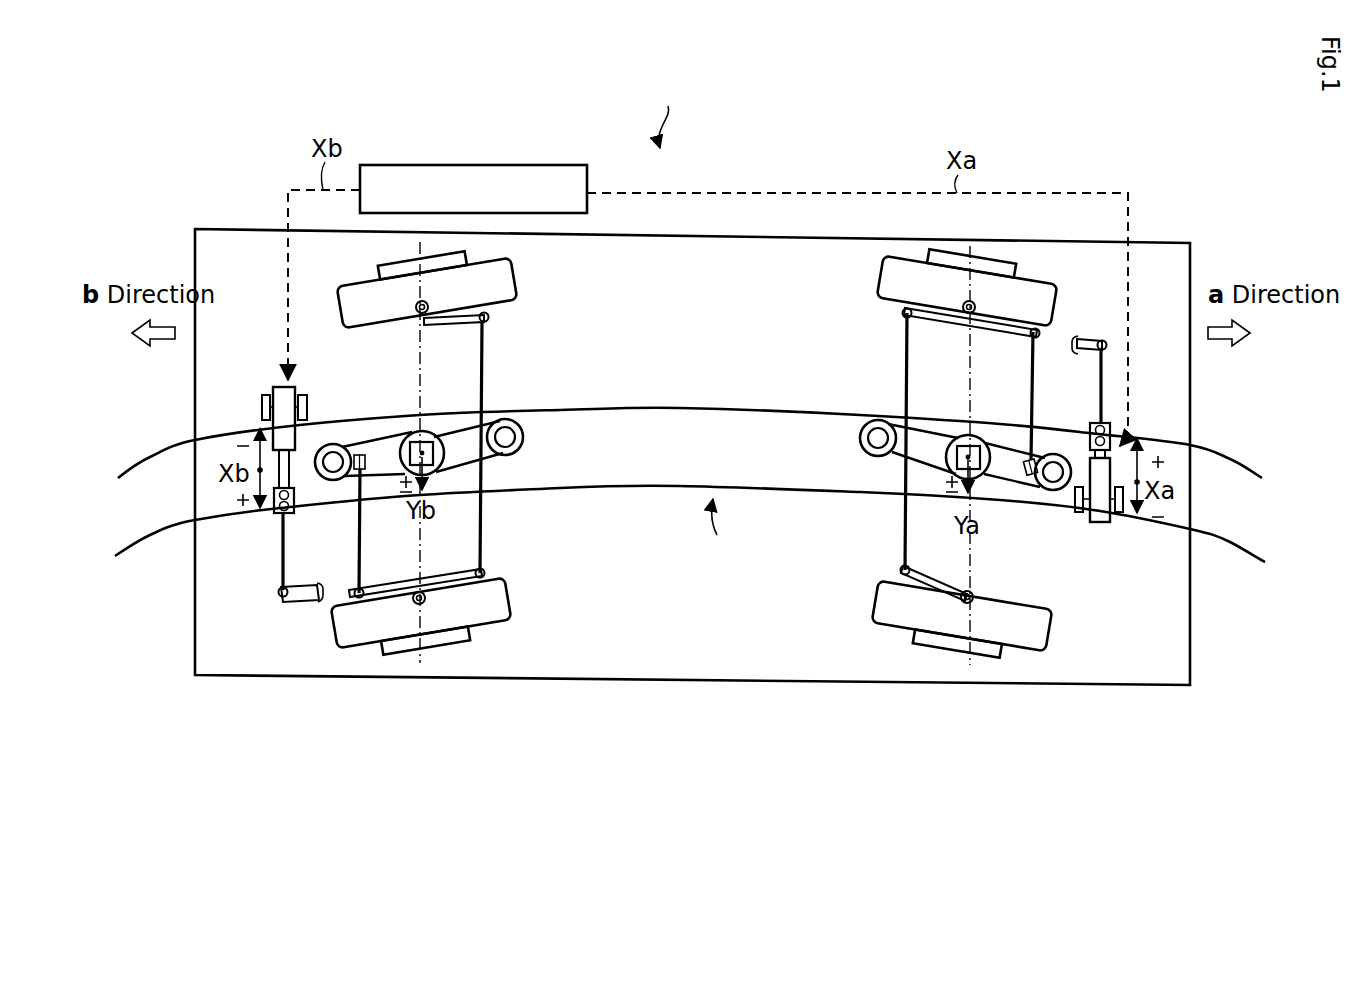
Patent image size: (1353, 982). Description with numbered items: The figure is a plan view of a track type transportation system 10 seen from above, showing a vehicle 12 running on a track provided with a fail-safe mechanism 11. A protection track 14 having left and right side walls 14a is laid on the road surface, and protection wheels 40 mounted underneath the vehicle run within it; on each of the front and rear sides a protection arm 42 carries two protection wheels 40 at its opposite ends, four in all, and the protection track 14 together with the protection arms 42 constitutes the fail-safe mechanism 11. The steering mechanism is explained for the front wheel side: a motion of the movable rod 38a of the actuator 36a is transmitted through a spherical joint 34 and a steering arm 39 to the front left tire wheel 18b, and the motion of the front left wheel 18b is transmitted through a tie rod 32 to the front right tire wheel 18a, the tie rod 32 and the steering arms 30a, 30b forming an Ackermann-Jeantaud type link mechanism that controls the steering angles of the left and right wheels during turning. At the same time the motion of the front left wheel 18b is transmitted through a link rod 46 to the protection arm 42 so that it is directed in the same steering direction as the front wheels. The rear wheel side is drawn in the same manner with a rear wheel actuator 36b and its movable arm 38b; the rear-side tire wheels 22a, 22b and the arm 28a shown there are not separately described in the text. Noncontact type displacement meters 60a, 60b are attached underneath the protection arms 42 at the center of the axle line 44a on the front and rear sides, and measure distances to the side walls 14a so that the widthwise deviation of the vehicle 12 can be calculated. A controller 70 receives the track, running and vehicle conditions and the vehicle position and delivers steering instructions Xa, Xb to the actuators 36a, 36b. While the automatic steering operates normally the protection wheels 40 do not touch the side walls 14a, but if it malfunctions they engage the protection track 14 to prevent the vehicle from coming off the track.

The track type transportation system 10 is at (683, 103).
The fail-safe mechanism 11 is at (730, 562).
The vehicle 12 is at (228, 228).
The protection track 14 is at (573, 490).
The side walls of protection track 14a is at (620, 412).
The front right tire wheel 18a is at (888, 275).
The front left tire wheel 18b is at (895, 620).
The front wheel (b side) 22a is at (518, 272).
The rear wheel (b side) 22b is at (496, 617).
The knuckle arm 28a is at (377, 592).
The steering arm 30a is at (472, 575).
The steering arm 30b is at (452, 326).
The tie rod 32 is at (484, 355).
The spherical joint 34 is at (487, 318).
The front wheel actuator 36a is at (1100, 525).
The rear wheel actuator 36b is at (275, 384).
The movable rod 38a is at (1105, 378).
The movable arm 38b is at (281, 543).
The steering arm 39 is at (296, 607).
The protection wheels 40 is at (524, 436).
The protection arm 42 is at (372, 432).
The axle line 44a is at (419, 347).
The link rod 46 is at (357, 560).
The noncontact type displacement meter 60a is at (955, 440).
The noncontact type displacement meter 60b is at (440, 475).
The controller 70 is at (542, 165).